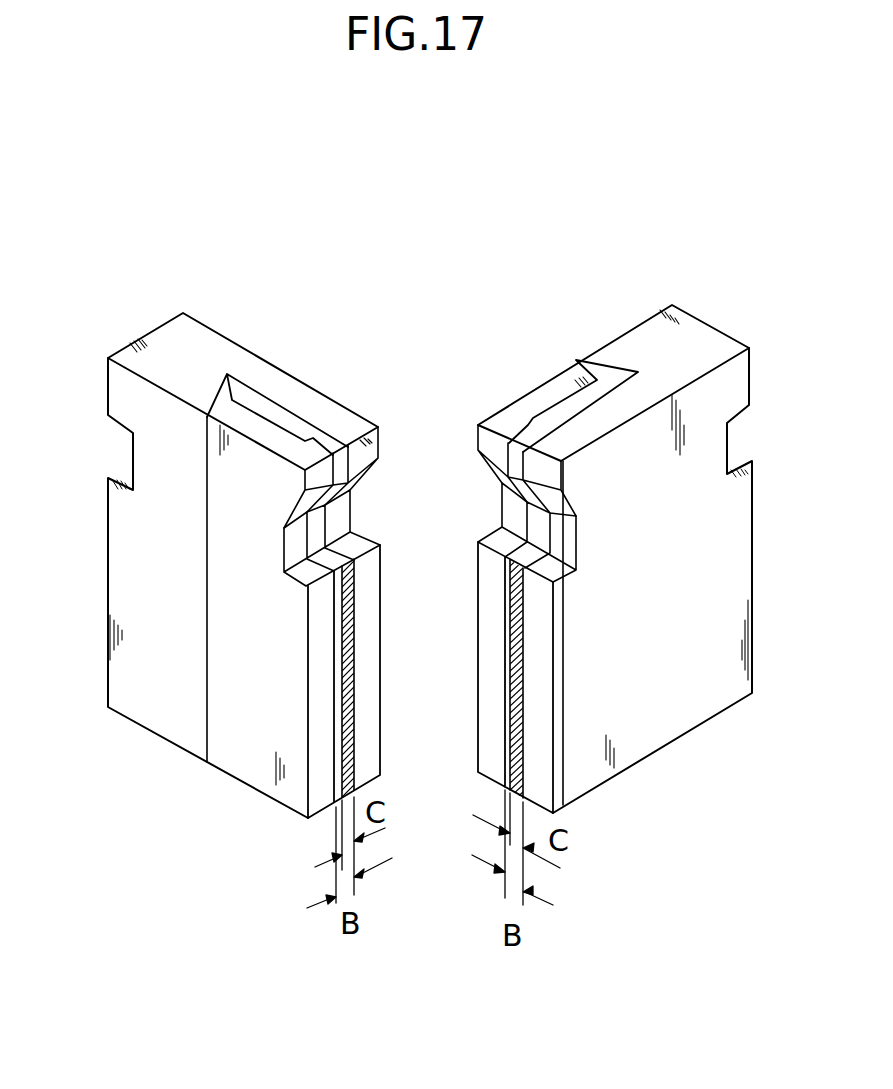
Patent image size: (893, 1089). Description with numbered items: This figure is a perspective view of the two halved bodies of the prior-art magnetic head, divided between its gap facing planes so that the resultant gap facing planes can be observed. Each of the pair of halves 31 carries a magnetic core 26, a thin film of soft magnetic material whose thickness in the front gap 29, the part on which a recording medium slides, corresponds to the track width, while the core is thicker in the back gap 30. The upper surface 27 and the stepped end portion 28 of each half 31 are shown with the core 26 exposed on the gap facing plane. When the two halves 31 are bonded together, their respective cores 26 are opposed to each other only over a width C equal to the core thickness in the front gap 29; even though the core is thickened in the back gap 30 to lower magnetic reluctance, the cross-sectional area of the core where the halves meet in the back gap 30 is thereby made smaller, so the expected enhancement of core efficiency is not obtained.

The magnetic core 26 is at (300, 432).
The upper surface 27 is at (182, 327).
The block member 28 is at (263, 773).
The front gap 29 is at (465, 415).
The back gap 30 is at (467, 542).
The halves of the magnetic head 31 is at (145, 712).